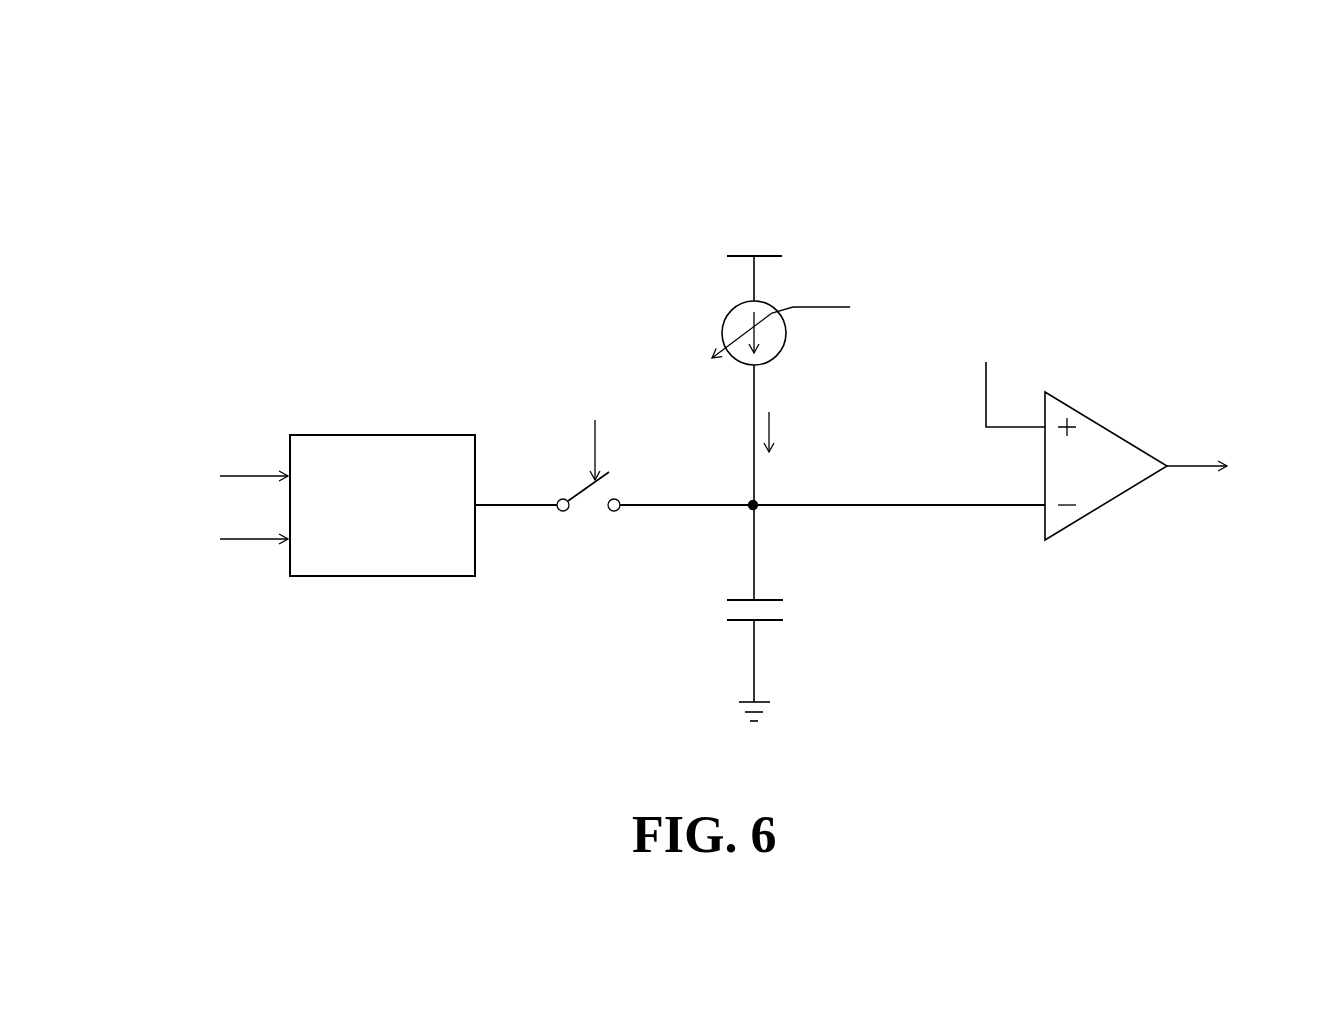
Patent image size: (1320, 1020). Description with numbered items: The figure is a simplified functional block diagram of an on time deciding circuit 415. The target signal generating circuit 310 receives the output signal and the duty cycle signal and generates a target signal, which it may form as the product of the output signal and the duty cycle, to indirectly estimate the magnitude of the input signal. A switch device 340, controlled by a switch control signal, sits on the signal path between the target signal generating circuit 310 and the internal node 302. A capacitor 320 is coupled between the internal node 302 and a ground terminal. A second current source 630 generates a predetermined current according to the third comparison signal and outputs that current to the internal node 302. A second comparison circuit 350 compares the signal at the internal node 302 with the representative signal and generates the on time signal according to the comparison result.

The on time deciding circuit 415 is at (253, 108).
The target signal generating circuit 310 is at (382, 435).
The switch device 340 is at (593, 506).
The internal node 302 is at (749, 501).
The second current source 630 is at (720, 334).
The capacitor 320 is at (733, 610).
The second comparison circuit 350 is at (1105, 505).